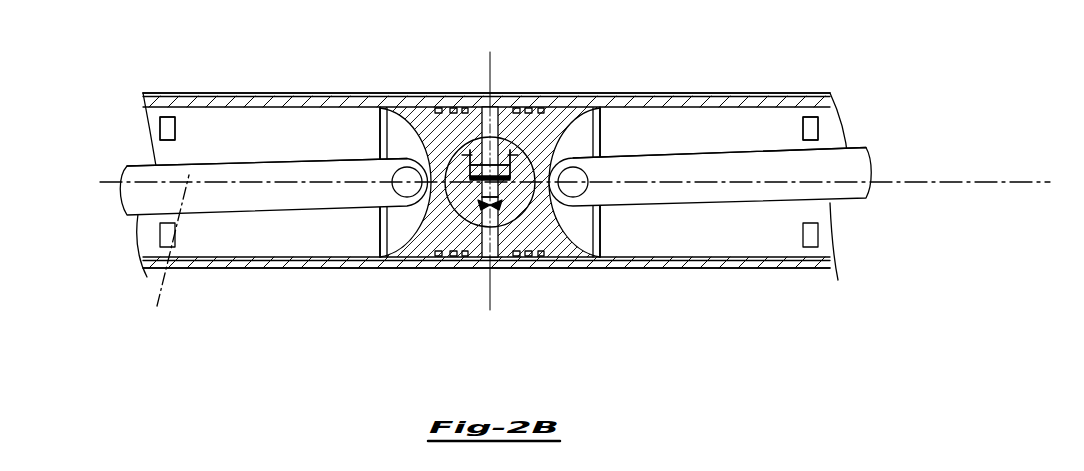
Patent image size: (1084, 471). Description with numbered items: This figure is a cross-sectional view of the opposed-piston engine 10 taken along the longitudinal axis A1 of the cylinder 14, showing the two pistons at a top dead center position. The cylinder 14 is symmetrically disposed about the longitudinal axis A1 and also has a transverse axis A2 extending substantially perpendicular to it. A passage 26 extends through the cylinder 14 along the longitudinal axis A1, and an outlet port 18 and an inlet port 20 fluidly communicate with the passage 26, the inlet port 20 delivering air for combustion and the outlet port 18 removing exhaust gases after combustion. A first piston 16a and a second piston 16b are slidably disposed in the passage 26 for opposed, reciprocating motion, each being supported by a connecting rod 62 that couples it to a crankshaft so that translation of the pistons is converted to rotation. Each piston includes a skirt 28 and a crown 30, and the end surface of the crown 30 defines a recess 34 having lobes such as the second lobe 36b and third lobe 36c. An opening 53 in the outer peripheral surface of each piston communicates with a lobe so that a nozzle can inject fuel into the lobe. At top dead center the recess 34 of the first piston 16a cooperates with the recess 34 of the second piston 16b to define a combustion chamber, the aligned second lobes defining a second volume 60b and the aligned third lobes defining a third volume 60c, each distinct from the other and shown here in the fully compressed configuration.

The engine 10 is at (782, 52).
The cylinder 14 is at (294, 92).
The first piston 16a is at (227, 121).
The second piston 16b is at (759, 120).
The outlet port 18 is at (157, 126).
The inlet port 20 is at (823, 124).
The passage 26 is at (273, 257).
The skirt 28 is at (380, 132).
The crown 30 is at (489, 107).
The recess 34 is at (458, 200).
The second lobe 36b is at (478, 150).
The third lobe 36c is at (482, 205).
The opening 53 is at (412, 213).
The second volume 60b is at (500, 165).
The third volume 60c is at (497, 225).
The connecting rod 62 is at (253, 170).
The longitudinal axis A1 is at (166, 248).
The transverse axis A2 is at (491, 52).